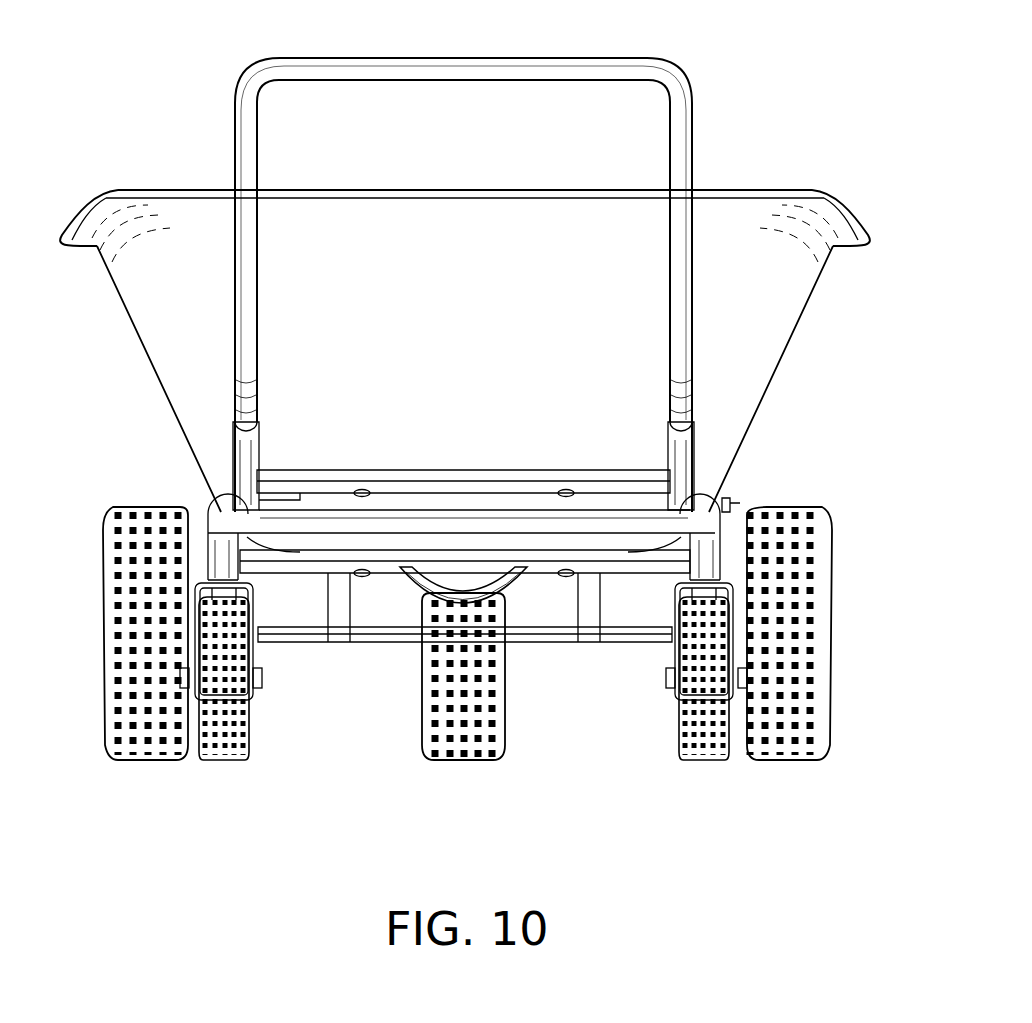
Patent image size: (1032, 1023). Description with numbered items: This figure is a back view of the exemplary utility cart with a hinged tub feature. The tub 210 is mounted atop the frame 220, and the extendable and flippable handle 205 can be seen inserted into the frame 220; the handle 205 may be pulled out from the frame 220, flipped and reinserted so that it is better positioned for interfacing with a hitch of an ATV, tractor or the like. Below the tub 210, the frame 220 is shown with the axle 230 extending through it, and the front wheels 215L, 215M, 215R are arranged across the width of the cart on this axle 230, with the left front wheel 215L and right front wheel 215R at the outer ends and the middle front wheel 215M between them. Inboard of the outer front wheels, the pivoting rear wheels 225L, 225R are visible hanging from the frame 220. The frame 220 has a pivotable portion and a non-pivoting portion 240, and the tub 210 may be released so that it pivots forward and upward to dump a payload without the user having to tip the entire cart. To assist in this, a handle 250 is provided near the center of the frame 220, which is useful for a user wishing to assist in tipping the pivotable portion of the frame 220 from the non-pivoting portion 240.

The handle 205 is at (233, 102).
The tub 210 is at (488, 292).
The frame 220 is at (697, 441).
The non-pivoting portion 240 is at (732, 500).
The handle 250 is at (510, 568).
The axle 230 is at (403, 644).
The pivoting rear wheel 225L is at (248, 722).
The pivoting rear wheel 225R is at (672, 722).
The front wheel 215L is at (105, 742).
The front wheel 215M is at (412, 742).
The front wheel 215R is at (820, 745).